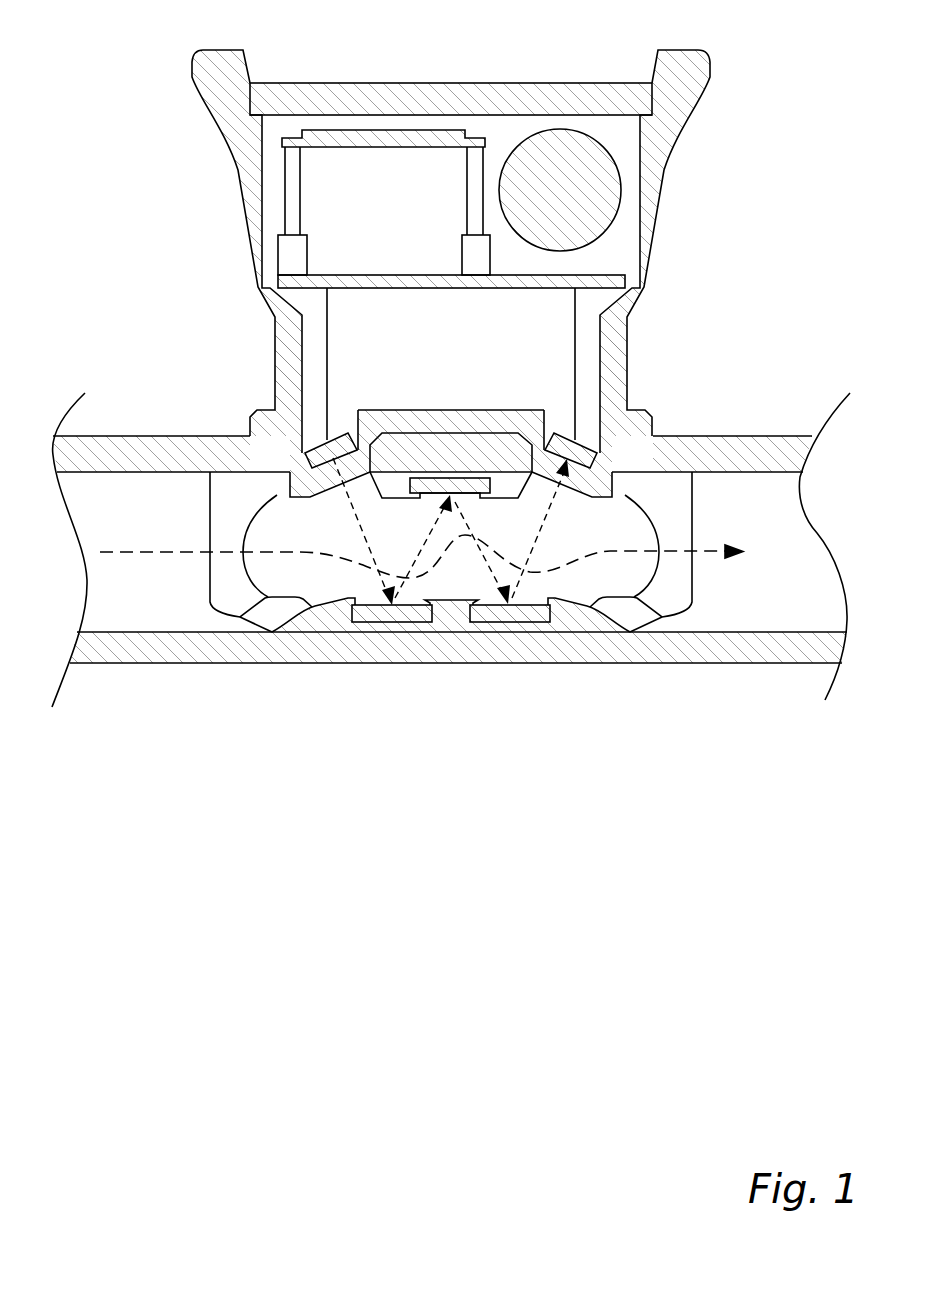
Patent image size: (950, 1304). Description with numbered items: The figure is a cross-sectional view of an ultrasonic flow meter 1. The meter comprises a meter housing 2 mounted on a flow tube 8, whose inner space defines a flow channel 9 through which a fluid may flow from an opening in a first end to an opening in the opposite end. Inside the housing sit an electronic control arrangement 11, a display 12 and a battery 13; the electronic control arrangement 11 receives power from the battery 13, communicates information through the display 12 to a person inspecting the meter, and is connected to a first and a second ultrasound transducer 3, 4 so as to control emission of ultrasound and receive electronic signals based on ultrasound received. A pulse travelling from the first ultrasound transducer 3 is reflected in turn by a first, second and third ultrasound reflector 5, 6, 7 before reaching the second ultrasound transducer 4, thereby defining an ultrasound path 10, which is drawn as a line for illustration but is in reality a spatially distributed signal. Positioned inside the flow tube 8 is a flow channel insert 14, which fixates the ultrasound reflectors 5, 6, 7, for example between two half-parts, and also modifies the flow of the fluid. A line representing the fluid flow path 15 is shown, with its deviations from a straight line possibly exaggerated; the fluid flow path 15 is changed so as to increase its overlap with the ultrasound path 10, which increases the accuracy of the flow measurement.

The ultrasonic flow meter 1 is at (125, 92).
The meter housing 2 is at (650, 182).
The first ultrasound transducer 3 is at (333, 447).
The second ultrasound transducer 4 is at (572, 443).
The first ultrasound reflector 5 is at (388, 614).
The second ultrasound reflector 6 is at (453, 490).
The third ultrasound reflector 7 is at (510, 618).
The flow tube 8 is at (360, 658).
The flow channel 9 is at (175, 578).
The ultrasound path 10 is at (540, 532).
The electronic control arrangement 11 is at (503, 282).
The display 12 is at (363, 138).
The battery 13 is at (578, 177).
The flow channel insert 14 is at (629, 519).
The fluid flow path 15 is at (225, 550).